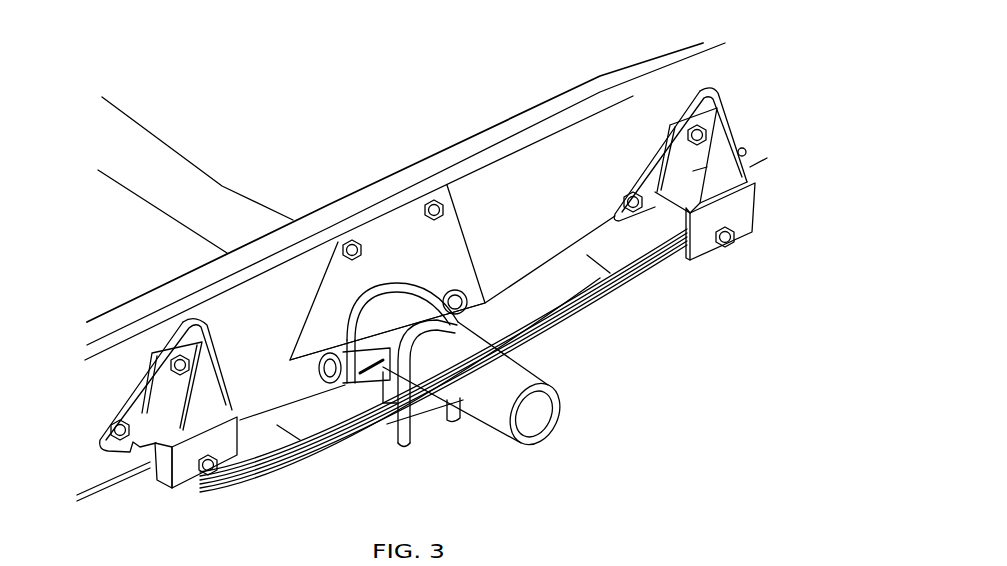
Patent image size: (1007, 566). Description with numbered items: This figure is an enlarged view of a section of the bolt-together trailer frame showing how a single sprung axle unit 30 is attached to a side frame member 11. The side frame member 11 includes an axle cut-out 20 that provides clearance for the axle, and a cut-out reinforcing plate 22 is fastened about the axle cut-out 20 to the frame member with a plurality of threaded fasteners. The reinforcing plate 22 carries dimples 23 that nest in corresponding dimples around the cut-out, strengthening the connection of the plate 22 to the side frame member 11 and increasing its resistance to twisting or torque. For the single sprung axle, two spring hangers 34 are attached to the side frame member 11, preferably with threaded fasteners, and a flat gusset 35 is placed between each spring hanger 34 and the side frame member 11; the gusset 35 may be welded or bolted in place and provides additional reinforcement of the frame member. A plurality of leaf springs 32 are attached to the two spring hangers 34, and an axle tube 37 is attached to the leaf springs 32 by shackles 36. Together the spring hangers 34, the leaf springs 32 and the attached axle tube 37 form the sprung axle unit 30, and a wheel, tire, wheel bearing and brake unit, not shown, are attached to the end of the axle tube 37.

The side frame member 11 is at (651, 58).
The axle cut-out 20 is at (410, 287).
The cut-out reinforcing plate 22 is at (460, 228).
The dimples 23 is at (470, 297).
The sprung axle unit 30 is at (226, 181).
The leaf springs 32 is at (570, 293).
The spring hanger 34 is at (187, 480).
The gusset 35 is at (125, 396).
The shackles 36 is at (402, 427).
The axle tube 37 is at (530, 390).